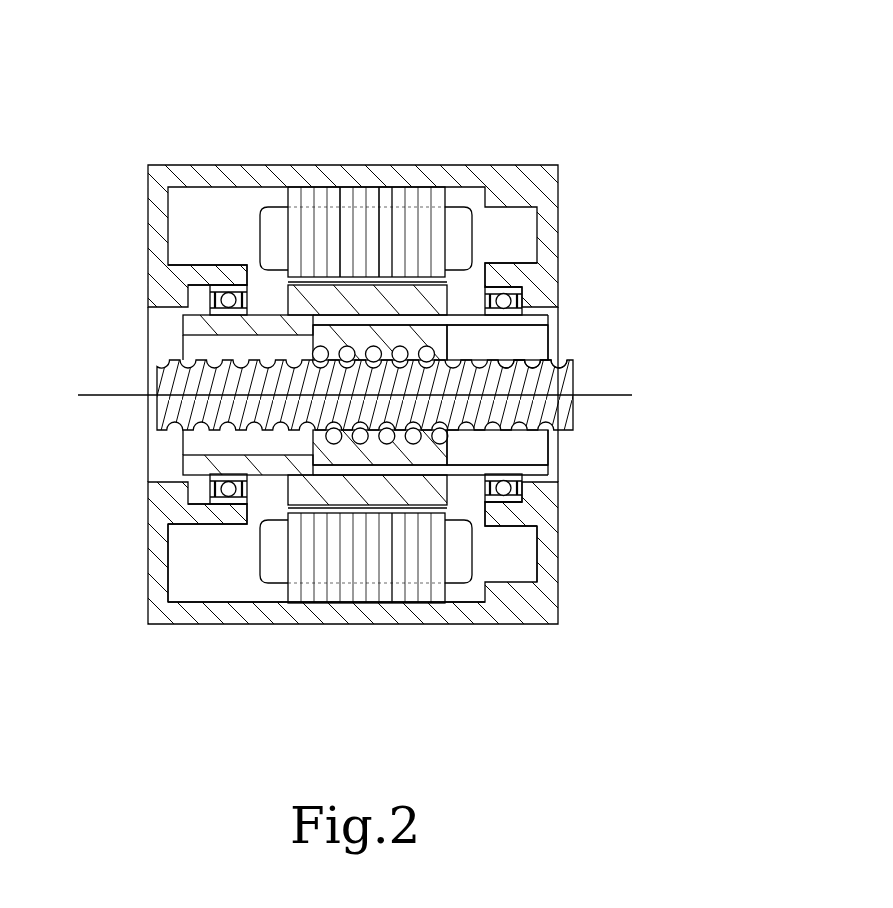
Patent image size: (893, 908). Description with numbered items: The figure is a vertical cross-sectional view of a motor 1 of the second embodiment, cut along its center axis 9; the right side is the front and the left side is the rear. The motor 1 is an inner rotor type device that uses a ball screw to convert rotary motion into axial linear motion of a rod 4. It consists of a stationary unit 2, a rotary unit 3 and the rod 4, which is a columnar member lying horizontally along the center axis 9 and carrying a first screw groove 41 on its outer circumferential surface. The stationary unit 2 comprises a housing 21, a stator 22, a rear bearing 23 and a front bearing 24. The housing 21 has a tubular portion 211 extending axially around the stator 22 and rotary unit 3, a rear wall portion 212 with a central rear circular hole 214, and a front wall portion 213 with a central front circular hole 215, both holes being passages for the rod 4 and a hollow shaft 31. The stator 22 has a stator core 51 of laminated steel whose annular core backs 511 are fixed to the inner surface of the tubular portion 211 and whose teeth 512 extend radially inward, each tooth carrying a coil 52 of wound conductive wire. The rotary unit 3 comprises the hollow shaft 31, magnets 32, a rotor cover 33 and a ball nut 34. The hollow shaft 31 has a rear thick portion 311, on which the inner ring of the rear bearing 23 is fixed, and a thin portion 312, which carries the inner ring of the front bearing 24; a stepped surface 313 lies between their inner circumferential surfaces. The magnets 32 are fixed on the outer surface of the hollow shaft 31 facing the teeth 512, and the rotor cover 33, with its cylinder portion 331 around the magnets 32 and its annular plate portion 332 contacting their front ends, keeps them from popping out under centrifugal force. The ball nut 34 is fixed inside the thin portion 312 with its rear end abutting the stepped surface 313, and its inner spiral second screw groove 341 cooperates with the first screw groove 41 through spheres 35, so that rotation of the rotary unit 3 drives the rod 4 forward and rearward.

The motor 1 is at (359, 389).
The stationary unit 2 is at (354, 394).
The housing 21 is at (353, 612).
The tubular portion 211 is at (353, 611).
The rear wall portion 212 is at (237, 610).
The front wall portion 213 is at (503, 577).
The rear circular hole 214 is at (152, 456).
The front circular hole 215 is at (560, 481).
The stator 22 is at (455, 77).
The rear bearing 23 is at (218, 500).
The front bearing 24 is at (530, 513).
The rotary unit 3 is at (359, 340).
The hollow shaft 31 is at (349, 369).
The thick portion 311 is at (252, 284).
The thin portion 312 is at (353, 280).
The stepped surface 313 is at (437, 429).
The magnets 32 is at (330, 298).
The rotor cover 33 is at (456, 340).
The cylinder portion 331 is at (449, 250).
The annular plate portion 332 is at (527, 288).
The ball nut 34 is at (354, 395).
The second screw groove 341 is at (334, 433).
The spheres 35 is at (432, 343).
The rod 4 is at (386, 369).
The first screw groove 41 is at (532, 352).
The stator core 51 is at (366, 340).
The core backs 511 is at (385, 200).
The teeth 512 is at (345, 237).
The coils 52 is at (455, 223).
The center axis 9 is at (114, 393).